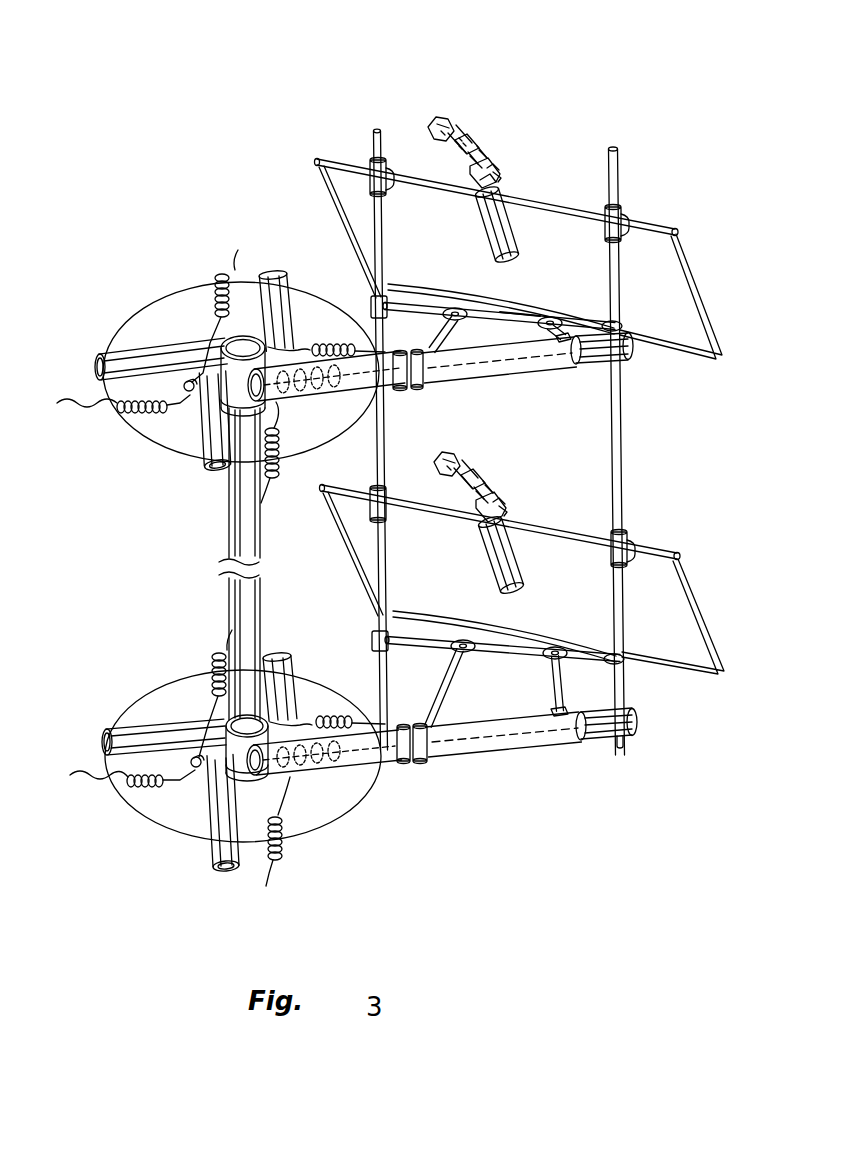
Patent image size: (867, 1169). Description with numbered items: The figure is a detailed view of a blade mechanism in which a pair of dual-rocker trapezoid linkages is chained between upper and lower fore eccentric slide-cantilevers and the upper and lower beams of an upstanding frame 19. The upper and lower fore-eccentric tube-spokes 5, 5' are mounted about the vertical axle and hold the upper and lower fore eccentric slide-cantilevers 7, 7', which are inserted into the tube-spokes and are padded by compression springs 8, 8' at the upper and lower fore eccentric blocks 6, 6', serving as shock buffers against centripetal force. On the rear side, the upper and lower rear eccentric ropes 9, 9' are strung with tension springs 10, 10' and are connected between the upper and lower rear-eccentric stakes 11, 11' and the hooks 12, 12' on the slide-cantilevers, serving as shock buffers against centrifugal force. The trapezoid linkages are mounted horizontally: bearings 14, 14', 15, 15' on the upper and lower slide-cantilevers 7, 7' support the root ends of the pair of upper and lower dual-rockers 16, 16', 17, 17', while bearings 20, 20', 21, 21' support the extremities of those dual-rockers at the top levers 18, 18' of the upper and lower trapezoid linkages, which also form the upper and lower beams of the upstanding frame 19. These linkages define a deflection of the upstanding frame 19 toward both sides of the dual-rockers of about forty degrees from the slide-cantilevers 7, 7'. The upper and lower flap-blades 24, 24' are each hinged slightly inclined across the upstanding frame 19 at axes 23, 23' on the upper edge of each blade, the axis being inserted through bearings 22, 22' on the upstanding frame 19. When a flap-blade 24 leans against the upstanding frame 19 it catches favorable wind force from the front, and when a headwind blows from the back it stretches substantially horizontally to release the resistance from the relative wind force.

The upper fore-eccentric tube-spoke 5 is at (551, 370).
The lower fore-eccentric tube-spoke 5' is at (560, 752).
The upper fore eccentric block 6 is at (288, 376).
The lower fore eccentric block 6' is at (292, 758).
The upper fore eccentric slide-cantilever 7 is at (330, 415).
The lower fore eccentric slide-cantilever 7' is at (324, 794).
The compression spring 8 is at (312, 422).
The compression spring 8' is at (313, 798).
The upper rear eccentric rope 9 is at (129, 413).
The lower rear eccentric rope 9' is at (132, 792).
The tension spring 10 is at (136, 453).
The tension spring 10' is at (141, 822).
The upper rear-eccentric stake 11 is at (194, 437).
The lower rear-eccentric stake 11' is at (197, 815).
The hook 12 is at (421, 396).
The hook 12' is at (429, 789).
The bearing 14 is at (469, 295).
The bearing 14' is at (515, 287).
The bearing 15 is at (429, 688).
The bearing 15' is at (539, 686).
The upper dual-rocker 16 is at (423, 289).
The lower dual-rocker 16' is at (575, 298).
The upper dual-rocker 17 is at (469, 672).
The lower dual-rocker 17' is at (585, 642).
The top lever of upper trapezoid linkage 18 is at (636, 298).
The top lever of lower trapezoid linkage 18' is at (638, 626).
The upstanding frame 19 is at (378, 128).
The bearing 20 is at (451, 273).
The bearing 20' is at (545, 286).
The bearing 21 is at (496, 612).
The bearing 21' is at (546, 616).
The bearing of flap-blade 22 is at (343, 127).
The bearing of flap-blade 22' is at (663, 183).
The axis of flap-blade 23 is at (481, 154).
The axis of flap-blade 23' is at (490, 491).
The upper flap-blade 24 is at (529, 185).
The lower flap-blade 24' is at (537, 523).